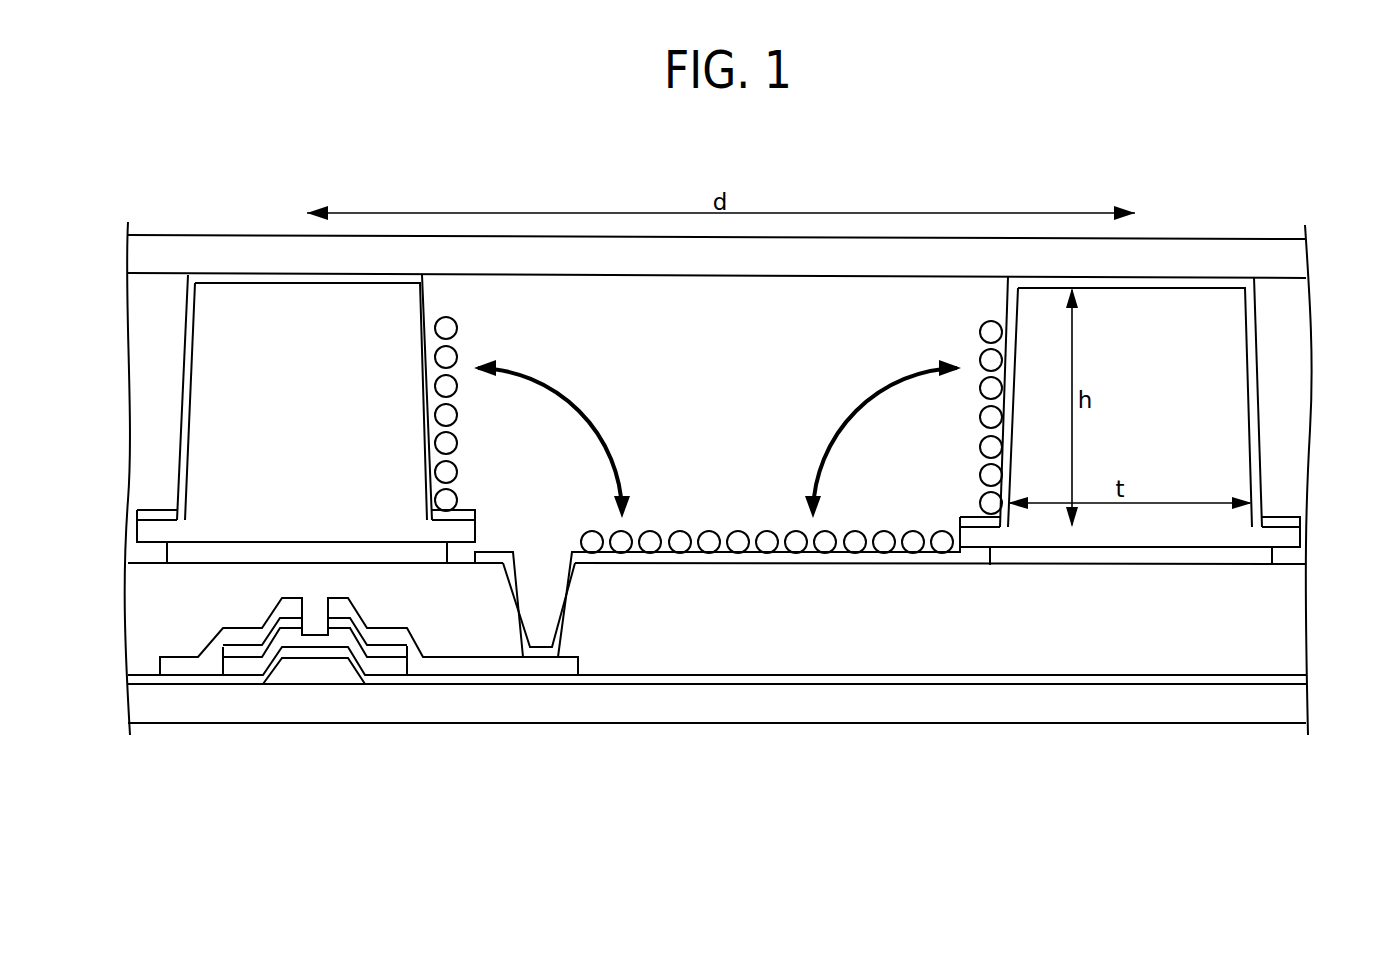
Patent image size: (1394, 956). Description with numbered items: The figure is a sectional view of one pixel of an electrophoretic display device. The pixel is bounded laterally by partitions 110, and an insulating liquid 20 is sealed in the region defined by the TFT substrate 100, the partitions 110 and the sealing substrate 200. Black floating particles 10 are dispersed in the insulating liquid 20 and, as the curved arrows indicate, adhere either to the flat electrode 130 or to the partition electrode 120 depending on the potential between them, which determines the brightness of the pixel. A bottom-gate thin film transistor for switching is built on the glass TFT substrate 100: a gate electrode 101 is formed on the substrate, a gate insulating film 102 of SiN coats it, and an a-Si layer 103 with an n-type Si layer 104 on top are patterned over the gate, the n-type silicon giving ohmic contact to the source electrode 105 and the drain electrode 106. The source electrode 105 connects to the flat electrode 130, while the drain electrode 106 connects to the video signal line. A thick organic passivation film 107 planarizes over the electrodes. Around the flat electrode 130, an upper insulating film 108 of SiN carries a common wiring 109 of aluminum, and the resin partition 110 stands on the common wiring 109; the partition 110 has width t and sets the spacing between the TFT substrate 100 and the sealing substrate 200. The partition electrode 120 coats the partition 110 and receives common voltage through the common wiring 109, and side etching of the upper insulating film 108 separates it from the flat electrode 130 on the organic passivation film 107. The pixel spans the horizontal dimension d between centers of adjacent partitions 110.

The black floating particles 10 is at (458, 415).
The insulating liquid 20 is at (840, 325).
The TFT substrate 100 is at (878, 705).
The gate electrode 101 is at (316, 678).
The gate insulating film 102 is at (485, 680).
The a-Si layer 103 is at (365, 665).
The n-type Si layer 104 is at (388, 655).
The source electrode 105 is at (540, 665).
The drain electrode 106 is at (200, 665).
The organic passivation film 107 is at (1270, 603).
The upper insulating film 108 is at (1260, 557).
The common wiring 109 is at (1277, 537).
The partition 110 is at (1220, 354).
The partition electrode 120 is at (432, 302).
The flat electrode 130 is at (577, 542).
The sealing substrate 200 is at (1207, 252).